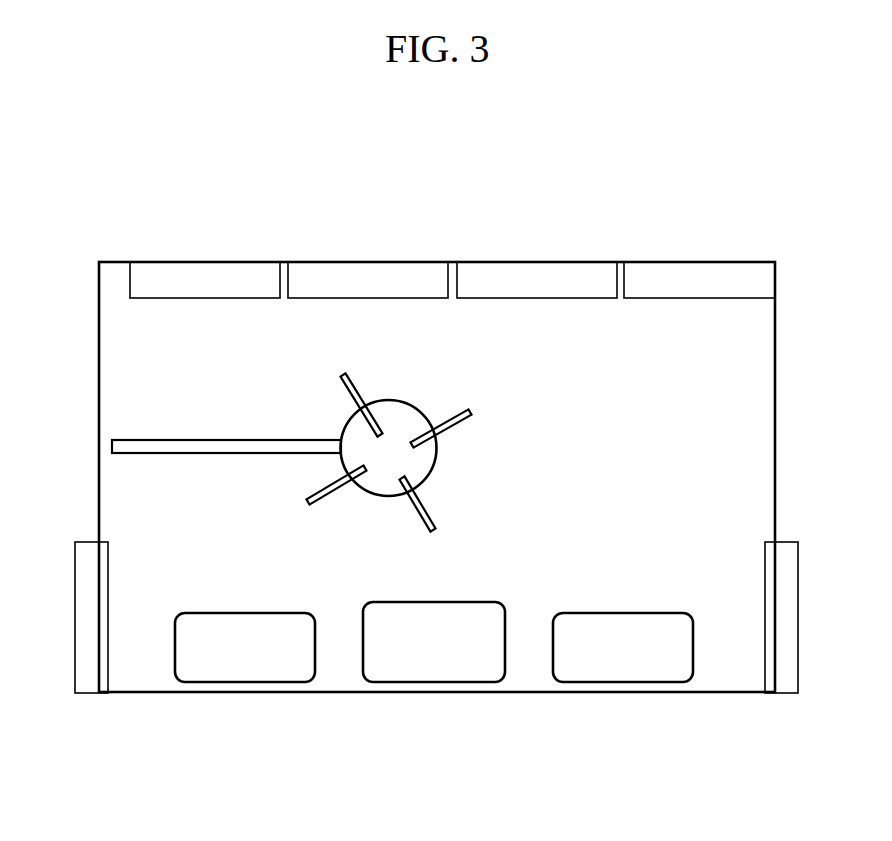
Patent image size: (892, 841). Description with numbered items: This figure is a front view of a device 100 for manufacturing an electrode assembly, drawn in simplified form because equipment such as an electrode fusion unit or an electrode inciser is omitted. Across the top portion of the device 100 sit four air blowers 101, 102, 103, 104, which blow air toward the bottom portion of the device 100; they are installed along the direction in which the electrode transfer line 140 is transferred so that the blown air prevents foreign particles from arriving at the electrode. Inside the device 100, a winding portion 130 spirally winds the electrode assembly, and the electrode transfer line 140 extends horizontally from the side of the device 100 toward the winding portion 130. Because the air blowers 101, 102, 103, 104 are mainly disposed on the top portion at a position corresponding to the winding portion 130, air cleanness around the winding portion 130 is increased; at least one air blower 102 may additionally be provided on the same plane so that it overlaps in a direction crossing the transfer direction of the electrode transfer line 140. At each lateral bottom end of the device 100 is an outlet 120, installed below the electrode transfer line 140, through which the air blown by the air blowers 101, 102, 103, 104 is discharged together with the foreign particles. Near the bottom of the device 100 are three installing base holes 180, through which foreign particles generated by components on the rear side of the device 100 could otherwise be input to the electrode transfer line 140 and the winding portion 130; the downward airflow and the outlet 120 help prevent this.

The device for manufacturing an electrode assembly 100 is at (167, 153).
The air blower 101 is at (204, 276).
The air blower 102 is at (367, 276).
The air blower 103 is at (532, 276).
The air blower 104 is at (694, 276).
The outlet 120 is at (110, 563).
The winding portion 130 is at (418, 460).
The electrode transfer line 140 is at (160, 440).
The installing base hole 180 is at (590, 660).